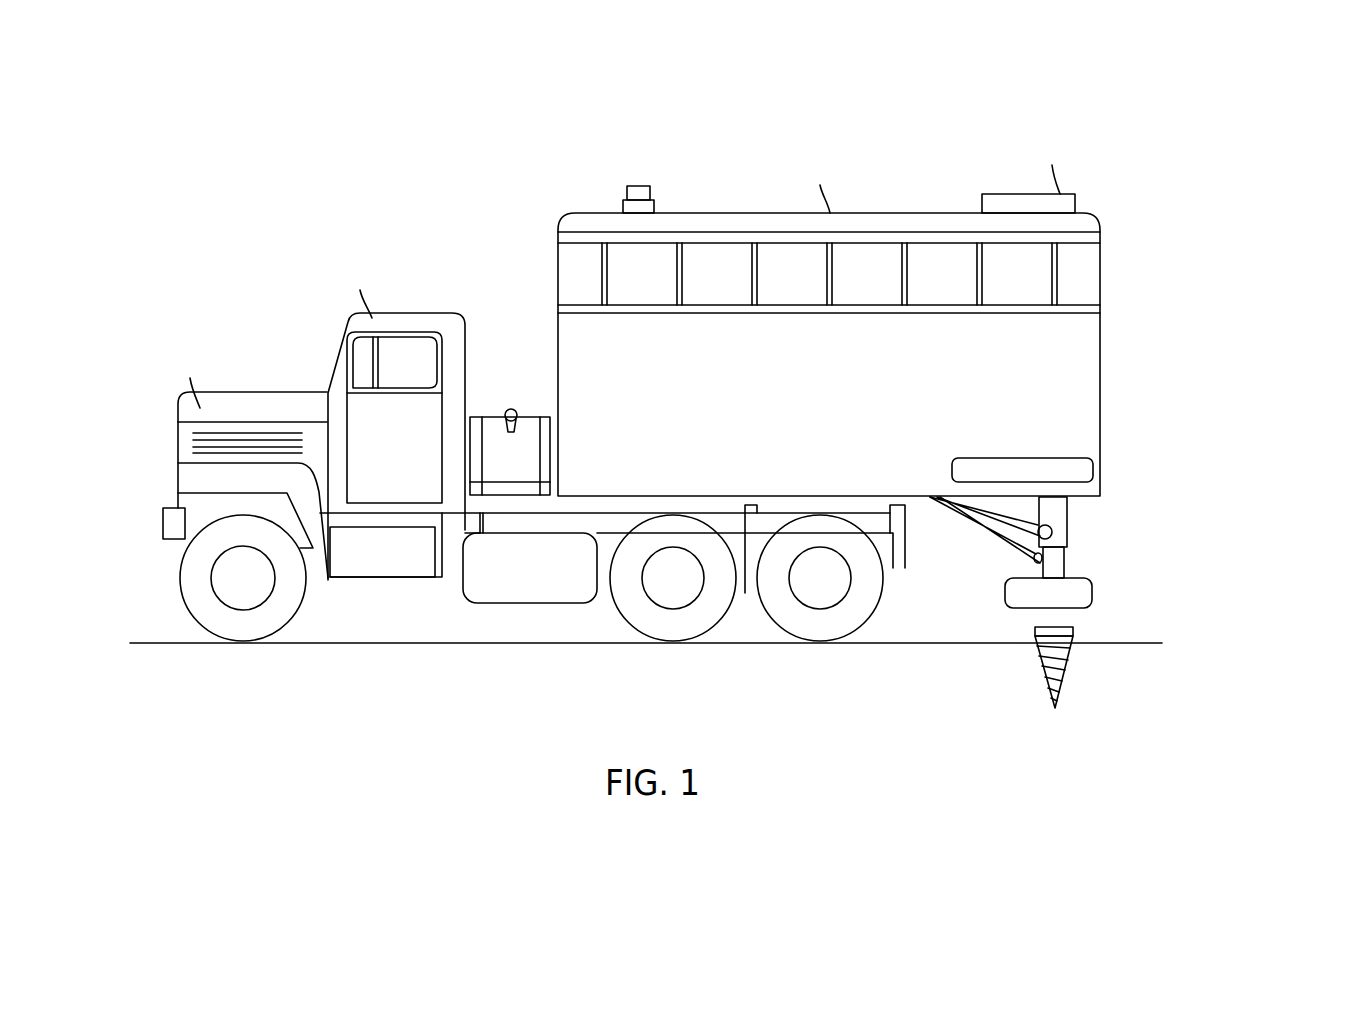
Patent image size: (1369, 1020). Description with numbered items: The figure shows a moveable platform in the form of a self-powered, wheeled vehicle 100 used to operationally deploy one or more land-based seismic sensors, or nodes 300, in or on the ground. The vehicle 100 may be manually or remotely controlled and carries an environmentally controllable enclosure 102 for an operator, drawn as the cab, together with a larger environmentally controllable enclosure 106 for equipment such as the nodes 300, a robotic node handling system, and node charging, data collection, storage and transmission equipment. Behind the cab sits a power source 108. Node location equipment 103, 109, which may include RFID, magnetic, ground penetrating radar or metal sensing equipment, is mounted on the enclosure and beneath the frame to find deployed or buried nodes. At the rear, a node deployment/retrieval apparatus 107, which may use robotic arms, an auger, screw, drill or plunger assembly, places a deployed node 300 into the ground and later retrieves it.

The vehicle 100 is at (336, 162).
The environmentally controllable enclosure for an operator 102 is at (358, 428).
The node location equipment 103 is at (1095, 468).
The environmentally controllable enclosure for equipment 106 is at (1102, 332).
The node deployment/retrieval apparatus 107 is at (1092, 590).
The power source 108 is at (528, 423).
The node location equipment 109 is at (510, 603).
The land-based seismic sensor 300 is at (1075, 636).